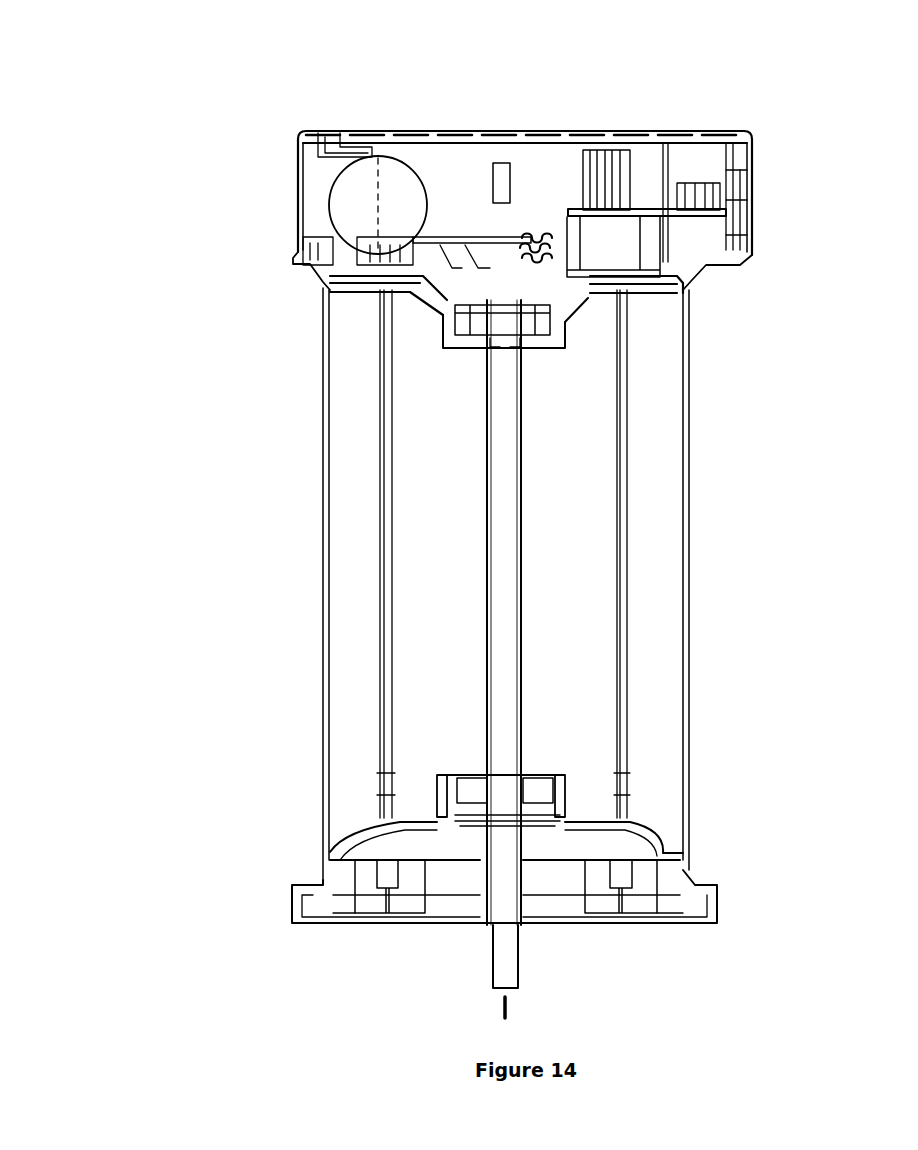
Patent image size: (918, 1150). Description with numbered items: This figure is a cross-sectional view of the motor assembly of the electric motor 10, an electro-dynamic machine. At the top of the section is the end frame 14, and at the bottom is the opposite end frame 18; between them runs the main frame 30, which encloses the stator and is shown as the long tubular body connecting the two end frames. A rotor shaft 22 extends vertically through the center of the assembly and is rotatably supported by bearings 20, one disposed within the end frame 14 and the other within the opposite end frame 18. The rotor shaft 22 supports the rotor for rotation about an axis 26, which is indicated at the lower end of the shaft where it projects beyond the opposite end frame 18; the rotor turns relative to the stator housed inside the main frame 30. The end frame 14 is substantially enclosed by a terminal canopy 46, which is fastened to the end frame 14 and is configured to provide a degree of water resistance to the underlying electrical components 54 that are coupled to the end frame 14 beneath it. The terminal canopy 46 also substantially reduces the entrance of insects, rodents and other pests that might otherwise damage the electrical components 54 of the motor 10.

The electric motor 10 is at (190, 90).
The end frame 14 is at (700, 263).
The opposite end frame 18 is at (687, 870).
The bearings 20 is at (540, 330).
The rotor shaft 22 is at (503, 573).
The axis 26 is at (508, 1005).
The main frame 30 is at (685, 608).
The terminal canopy 46 is at (703, 129).
The electrical components 54 is at (640, 158).